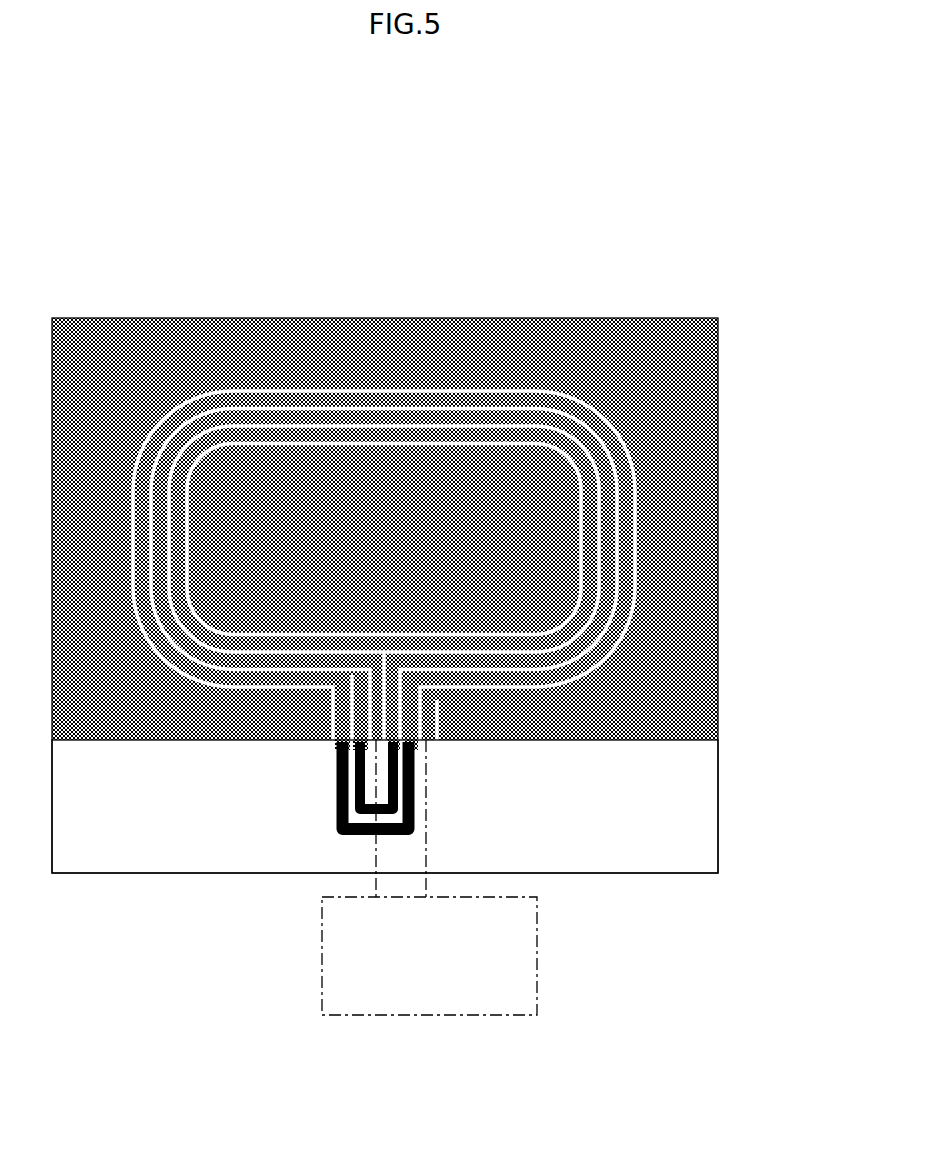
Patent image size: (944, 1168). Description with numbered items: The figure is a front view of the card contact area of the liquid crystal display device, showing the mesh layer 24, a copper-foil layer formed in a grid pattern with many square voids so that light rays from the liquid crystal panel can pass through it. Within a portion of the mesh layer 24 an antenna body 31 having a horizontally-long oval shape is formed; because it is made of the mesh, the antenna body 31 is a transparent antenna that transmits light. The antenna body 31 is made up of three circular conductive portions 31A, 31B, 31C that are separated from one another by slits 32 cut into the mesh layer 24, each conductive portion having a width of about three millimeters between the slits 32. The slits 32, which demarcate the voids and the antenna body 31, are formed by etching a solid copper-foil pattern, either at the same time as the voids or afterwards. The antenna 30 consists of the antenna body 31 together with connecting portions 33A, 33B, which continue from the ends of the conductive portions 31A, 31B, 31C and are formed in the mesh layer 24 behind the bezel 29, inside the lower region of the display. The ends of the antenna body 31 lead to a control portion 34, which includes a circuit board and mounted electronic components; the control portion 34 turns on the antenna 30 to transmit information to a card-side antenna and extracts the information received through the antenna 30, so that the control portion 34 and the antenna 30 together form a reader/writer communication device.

The mesh layer 24 is at (645, 340).
The bezel 29 is at (693, 795).
The antenna 30 is at (498, 790).
The antenna body 31 is at (384, 456).
The conductive portion 31A is at (258, 391).
The conductive portion 31B is at (318, 408).
The conductive portion 31C is at (372, 425).
The slits 32 is at (505, 443).
The connecting portion 33A is at (337, 766).
The connecting portion 33B is at (355, 797).
The control portion 34 is at (537, 962).